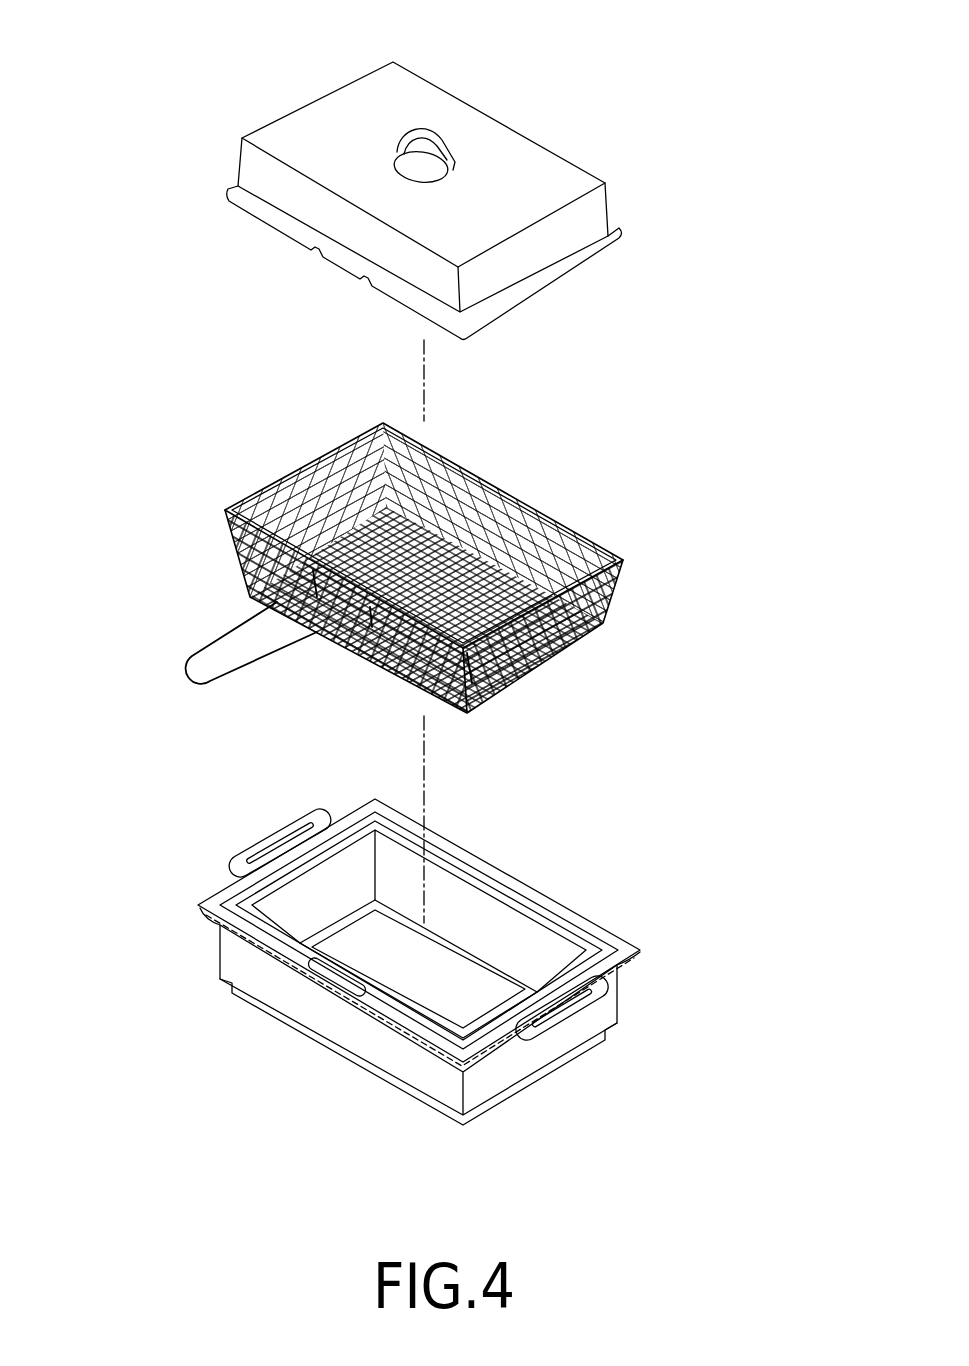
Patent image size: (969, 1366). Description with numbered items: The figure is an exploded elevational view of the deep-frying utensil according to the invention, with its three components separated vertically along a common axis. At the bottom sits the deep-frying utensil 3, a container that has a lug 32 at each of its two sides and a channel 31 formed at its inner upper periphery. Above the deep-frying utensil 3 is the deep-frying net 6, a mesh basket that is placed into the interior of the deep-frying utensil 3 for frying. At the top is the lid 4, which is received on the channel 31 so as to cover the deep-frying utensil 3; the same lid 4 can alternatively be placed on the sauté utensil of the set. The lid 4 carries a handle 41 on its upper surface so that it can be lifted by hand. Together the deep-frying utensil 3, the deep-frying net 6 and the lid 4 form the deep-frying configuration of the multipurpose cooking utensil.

The deep-frying utensil 3 is at (397, 953).
The channel 31 is at (472, 880).
The lug 32 is at (253, 850).
The lid 4 is at (397, 172).
The handle 41 is at (403, 133).
The deep-frying net 6 is at (620, 557).